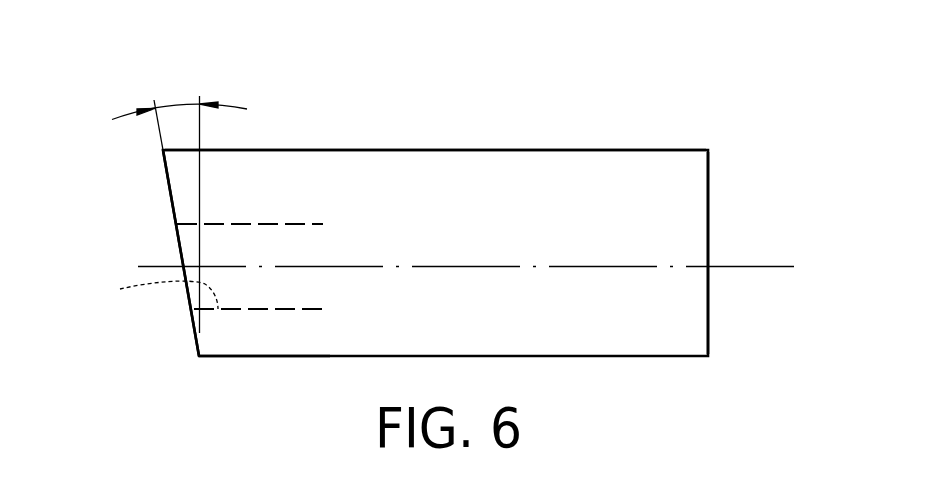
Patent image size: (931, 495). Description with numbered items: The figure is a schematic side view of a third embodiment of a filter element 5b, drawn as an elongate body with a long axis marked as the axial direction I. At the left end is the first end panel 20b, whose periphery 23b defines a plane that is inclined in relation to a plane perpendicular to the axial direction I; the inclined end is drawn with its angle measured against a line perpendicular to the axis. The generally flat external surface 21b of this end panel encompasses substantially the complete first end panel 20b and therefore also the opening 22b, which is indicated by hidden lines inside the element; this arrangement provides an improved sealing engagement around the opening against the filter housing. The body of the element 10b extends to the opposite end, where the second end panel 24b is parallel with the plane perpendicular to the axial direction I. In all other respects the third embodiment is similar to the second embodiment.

The filter element 5b is at (718, 85).
The upper surface 10b is at (351, 150).
The first end panel 20b is at (169, 187).
The external surface 21b is at (193, 322).
The opening 22b is at (142, 293).
The periphery 23b is at (197, 357).
The second end panel 24b is at (709, 193).
The axial direction I is at (768, 267).